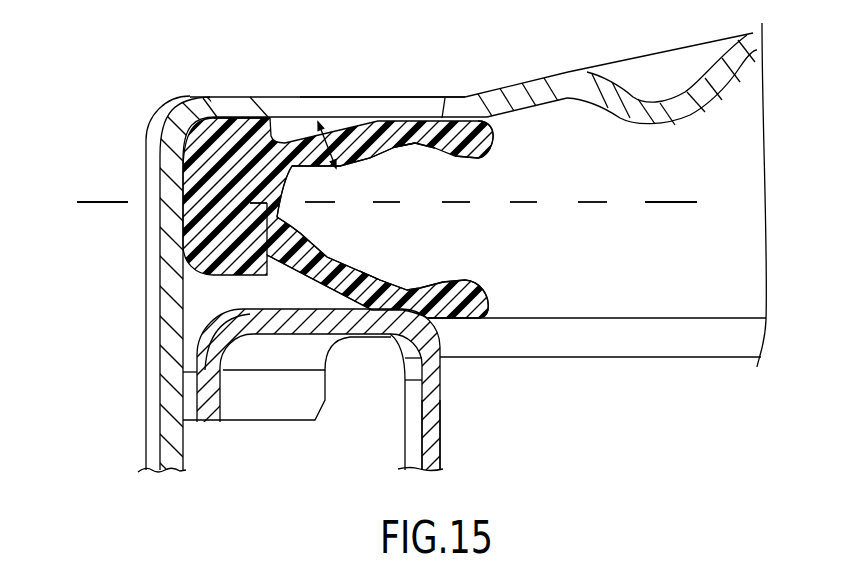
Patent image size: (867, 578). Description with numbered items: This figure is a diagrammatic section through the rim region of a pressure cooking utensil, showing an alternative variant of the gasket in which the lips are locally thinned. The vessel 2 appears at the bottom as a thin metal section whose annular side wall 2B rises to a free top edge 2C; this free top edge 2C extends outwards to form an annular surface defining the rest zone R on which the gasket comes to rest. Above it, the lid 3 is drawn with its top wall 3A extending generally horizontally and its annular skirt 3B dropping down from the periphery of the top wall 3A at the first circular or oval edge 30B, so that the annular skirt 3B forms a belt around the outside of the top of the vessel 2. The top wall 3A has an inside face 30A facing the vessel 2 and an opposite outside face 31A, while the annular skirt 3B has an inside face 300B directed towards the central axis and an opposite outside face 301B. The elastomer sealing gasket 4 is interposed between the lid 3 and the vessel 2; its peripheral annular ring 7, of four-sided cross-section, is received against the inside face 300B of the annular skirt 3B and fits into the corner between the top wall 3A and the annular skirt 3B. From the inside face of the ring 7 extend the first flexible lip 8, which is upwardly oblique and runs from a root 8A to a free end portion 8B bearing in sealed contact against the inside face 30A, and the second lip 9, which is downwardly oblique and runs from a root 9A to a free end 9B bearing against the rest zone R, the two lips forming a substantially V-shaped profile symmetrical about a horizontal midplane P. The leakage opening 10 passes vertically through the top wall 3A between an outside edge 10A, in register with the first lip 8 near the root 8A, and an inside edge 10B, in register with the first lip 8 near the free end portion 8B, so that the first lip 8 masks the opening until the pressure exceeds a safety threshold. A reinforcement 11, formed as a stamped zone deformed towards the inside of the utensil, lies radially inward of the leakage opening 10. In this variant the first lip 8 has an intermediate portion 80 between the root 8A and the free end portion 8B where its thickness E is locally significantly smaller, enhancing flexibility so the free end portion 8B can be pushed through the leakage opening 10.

The vessel 2 is at (433, 417).
The annular side wall 2B is at (435, 443).
The free top edge 2C is at (390, 335).
The lid 3 is at (557, 74).
The top wall 3A is at (503, 96).
The annular skirt 3B is at (166, 310).
The sealing gasket 4 is at (362, 166).
The peripheral annular ring 7 is at (177, 123).
The first flexible lip 8 is at (397, 137).
The root 8A is at (259, 97).
The free end portion 8B is at (480, 145).
The second lip 9 is at (371, 302).
The root 9A is at (272, 205).
The free end 9B is at (476, 281).
The leakage opening 10 is at (353, 110).
The outside edge 10A is at (293, 118).
The inside edge 10B is at (443, 98).
The reinforcement 11 is at (699, 114).
The inside face 30A is at (548, 108).
The first circular or oval edge 30B is at (202, 97).
The outside face 31A is at (446, 97).
The intermediate portion 80 is at (418, 144).
The inside face 300B is at (183, 294).
The outside face 301B is at (162, 233).
The thickness E is at (327, 162).
The horizontal midplane P is at (102, 200).
The rest zone R is at (381, 278).